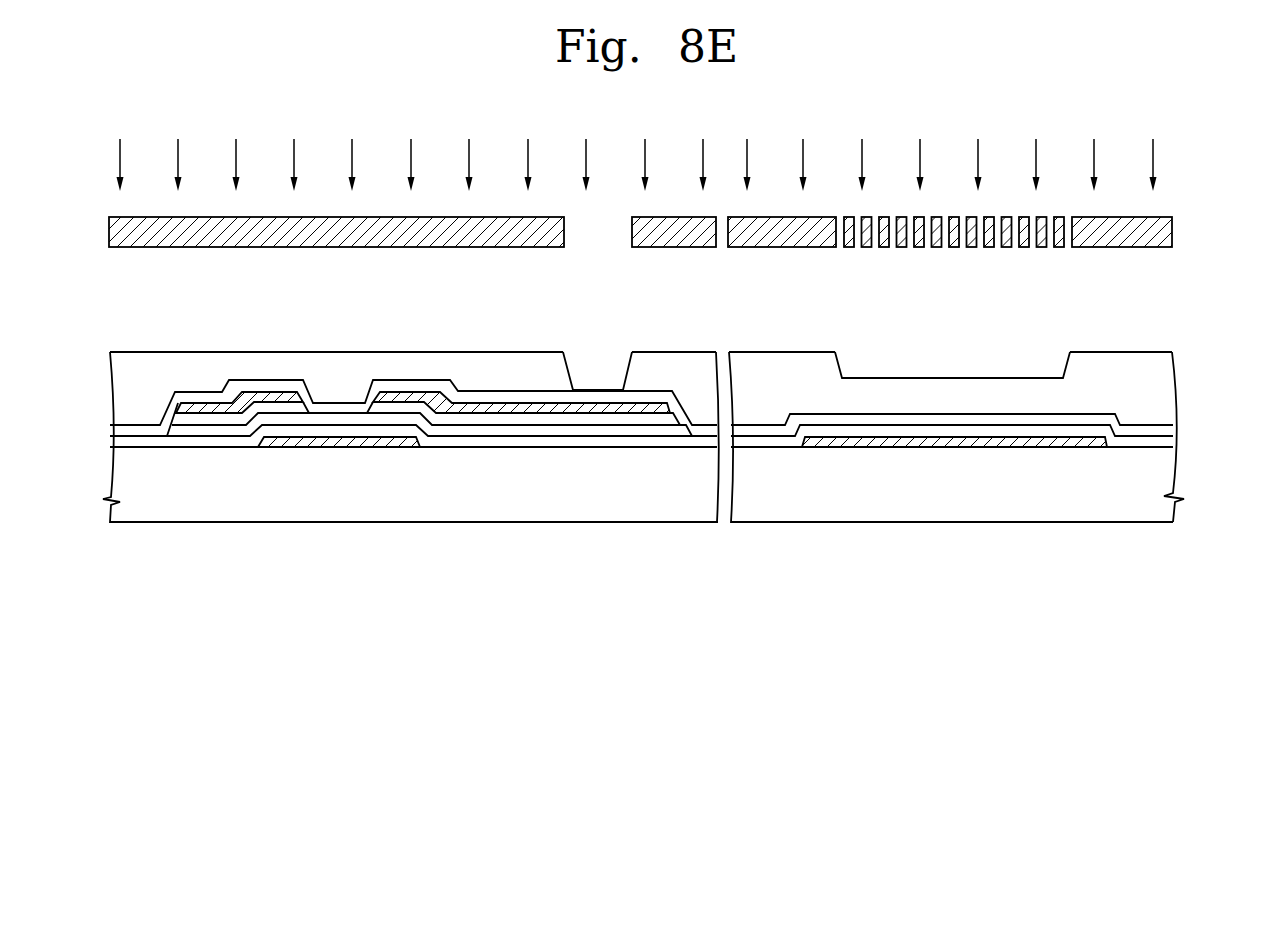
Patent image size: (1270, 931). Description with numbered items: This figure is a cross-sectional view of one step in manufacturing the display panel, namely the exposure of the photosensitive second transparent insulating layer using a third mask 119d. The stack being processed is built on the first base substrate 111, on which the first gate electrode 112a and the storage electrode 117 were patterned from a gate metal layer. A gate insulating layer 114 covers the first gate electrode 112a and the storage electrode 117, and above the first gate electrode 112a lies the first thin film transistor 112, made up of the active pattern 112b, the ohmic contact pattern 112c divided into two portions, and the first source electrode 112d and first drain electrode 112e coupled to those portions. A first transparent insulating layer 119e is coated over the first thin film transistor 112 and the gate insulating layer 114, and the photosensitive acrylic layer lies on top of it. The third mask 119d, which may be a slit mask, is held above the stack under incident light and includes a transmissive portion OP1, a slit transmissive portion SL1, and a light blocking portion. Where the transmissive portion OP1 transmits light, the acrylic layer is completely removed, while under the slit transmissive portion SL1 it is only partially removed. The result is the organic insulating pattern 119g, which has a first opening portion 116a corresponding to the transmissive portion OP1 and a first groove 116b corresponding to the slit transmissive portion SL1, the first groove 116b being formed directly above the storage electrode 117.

The third mask 119d is at (683, 268).
The slit transmissive portion SL1 is at (988, 257).
The transmissive portion OP1 is at (605, 225).
The first opening portion 116a is at (605, 363).
The first groove 116b is at (955, 363).
The organic insulating pattern 119g is at (641, 344).
The first transparent insulating layer 119e is at (117, 427).
The gate insulating layer 114 is at (117, 443).
The first base substrate 111 is at (117, 465).
The first thin film transistor 112 is at (432, 504).
The first gate electrode 112a is at (338, 447).
The active pattern 112b is at (470, 430).
The ohmic contact pattern 112c is at (233, 418).
The first source electrode 112d is at (204, 413).
The first drain electrode 112e is at (521, 486).
The storage electrode 117 is at (950, 447).